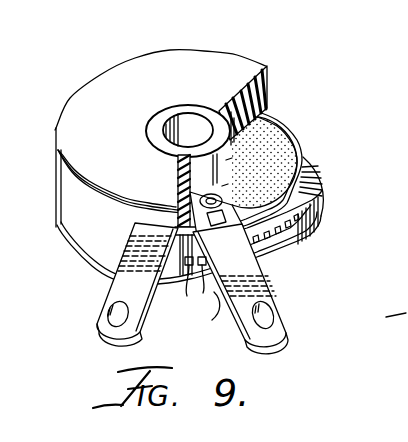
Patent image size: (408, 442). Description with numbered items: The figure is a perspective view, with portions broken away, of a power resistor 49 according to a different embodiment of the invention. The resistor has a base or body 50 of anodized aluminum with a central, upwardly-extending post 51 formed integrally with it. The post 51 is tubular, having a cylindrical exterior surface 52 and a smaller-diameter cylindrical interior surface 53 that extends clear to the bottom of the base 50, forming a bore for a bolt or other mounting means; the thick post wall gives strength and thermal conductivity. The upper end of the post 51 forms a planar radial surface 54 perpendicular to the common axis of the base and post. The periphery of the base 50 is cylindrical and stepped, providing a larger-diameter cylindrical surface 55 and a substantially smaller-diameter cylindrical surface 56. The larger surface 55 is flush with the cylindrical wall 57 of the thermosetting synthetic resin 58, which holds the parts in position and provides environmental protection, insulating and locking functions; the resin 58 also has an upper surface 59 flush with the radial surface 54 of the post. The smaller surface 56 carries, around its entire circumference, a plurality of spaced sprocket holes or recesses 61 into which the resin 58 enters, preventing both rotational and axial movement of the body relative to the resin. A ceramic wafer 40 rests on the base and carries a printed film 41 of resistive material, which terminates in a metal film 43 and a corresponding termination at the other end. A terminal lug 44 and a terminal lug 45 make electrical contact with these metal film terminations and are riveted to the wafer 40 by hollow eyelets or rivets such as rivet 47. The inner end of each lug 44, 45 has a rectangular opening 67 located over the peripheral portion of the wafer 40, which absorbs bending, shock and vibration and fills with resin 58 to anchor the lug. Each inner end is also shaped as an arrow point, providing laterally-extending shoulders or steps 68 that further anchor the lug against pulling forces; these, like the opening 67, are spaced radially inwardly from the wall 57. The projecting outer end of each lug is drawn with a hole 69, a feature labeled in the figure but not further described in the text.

The power resistor 49 is at (176, 42).
The upper surface 59 is at (100, 76).
The thermosetting synthetic resin 58 is at (270, 74).
The planar radial surface 54 is at (166, 114).
The cylindrical interior surface 53 is at (195, 122).
The post 51 is at (140, 138).
The cylindrical wall 57 is at (62, 189).
The rectangular opening 67 is at (184, 204).
The film of resistive material 41 is at (279, 131).
The wafer 40 is at (299, 141).
The cylindrical exterior surface 52 is at (233, 144).
The metal film 43 is at (233, 170).
The hollow eyelet or rivet 47 is at (228, 189).
The base or body 50 is at (326, 233).
The smaller-diameter cylindrical surface 56 is at (302, 248).
The terminal lug 44 is at (110, 288).
The terminal lug 45 is at (268, 292).
The mounting hole 69 is at (106, 316).
The shoulders or steps 68 is at (198, 240).
The sprocket holes or recesses 61 is at (191, 298).
The larger-diameter cylindrical surface 55 is at (216, 292).